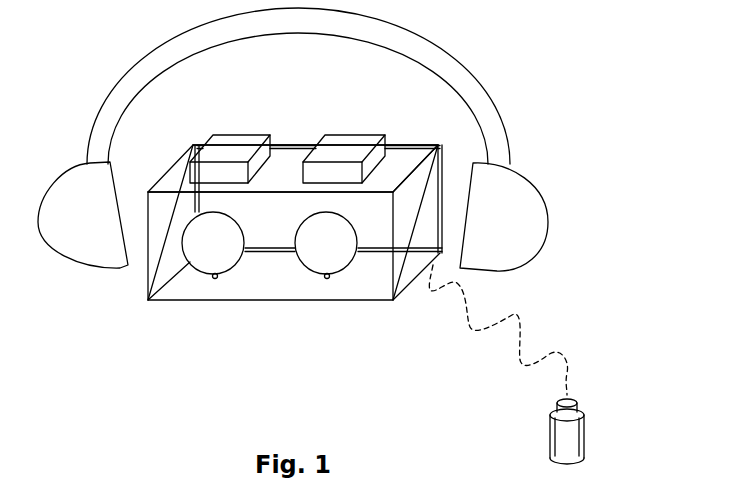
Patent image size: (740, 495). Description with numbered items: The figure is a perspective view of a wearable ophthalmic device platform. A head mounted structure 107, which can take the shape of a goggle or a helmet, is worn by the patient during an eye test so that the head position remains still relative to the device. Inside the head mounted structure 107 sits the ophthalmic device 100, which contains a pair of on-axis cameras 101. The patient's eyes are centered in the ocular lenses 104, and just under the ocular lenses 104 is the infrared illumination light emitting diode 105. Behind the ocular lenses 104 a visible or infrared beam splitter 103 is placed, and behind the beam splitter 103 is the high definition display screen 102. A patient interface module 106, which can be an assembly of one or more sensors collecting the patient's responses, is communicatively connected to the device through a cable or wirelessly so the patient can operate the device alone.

The ophthalmic device 100 is at (255, 290).
The on-axis cameras 101 is at (333, 135).
The high definition display screen 102 is at (420, 175).
The beam splitter 103 is at (434, 194).
The ocular lenses 104 is at (337, 258).
The infrared illumination light emitting diode 105 is at (214, 279).
The patient interface module 106 is at (547, 353).
The head mounted structure 107 is at (538, 222).